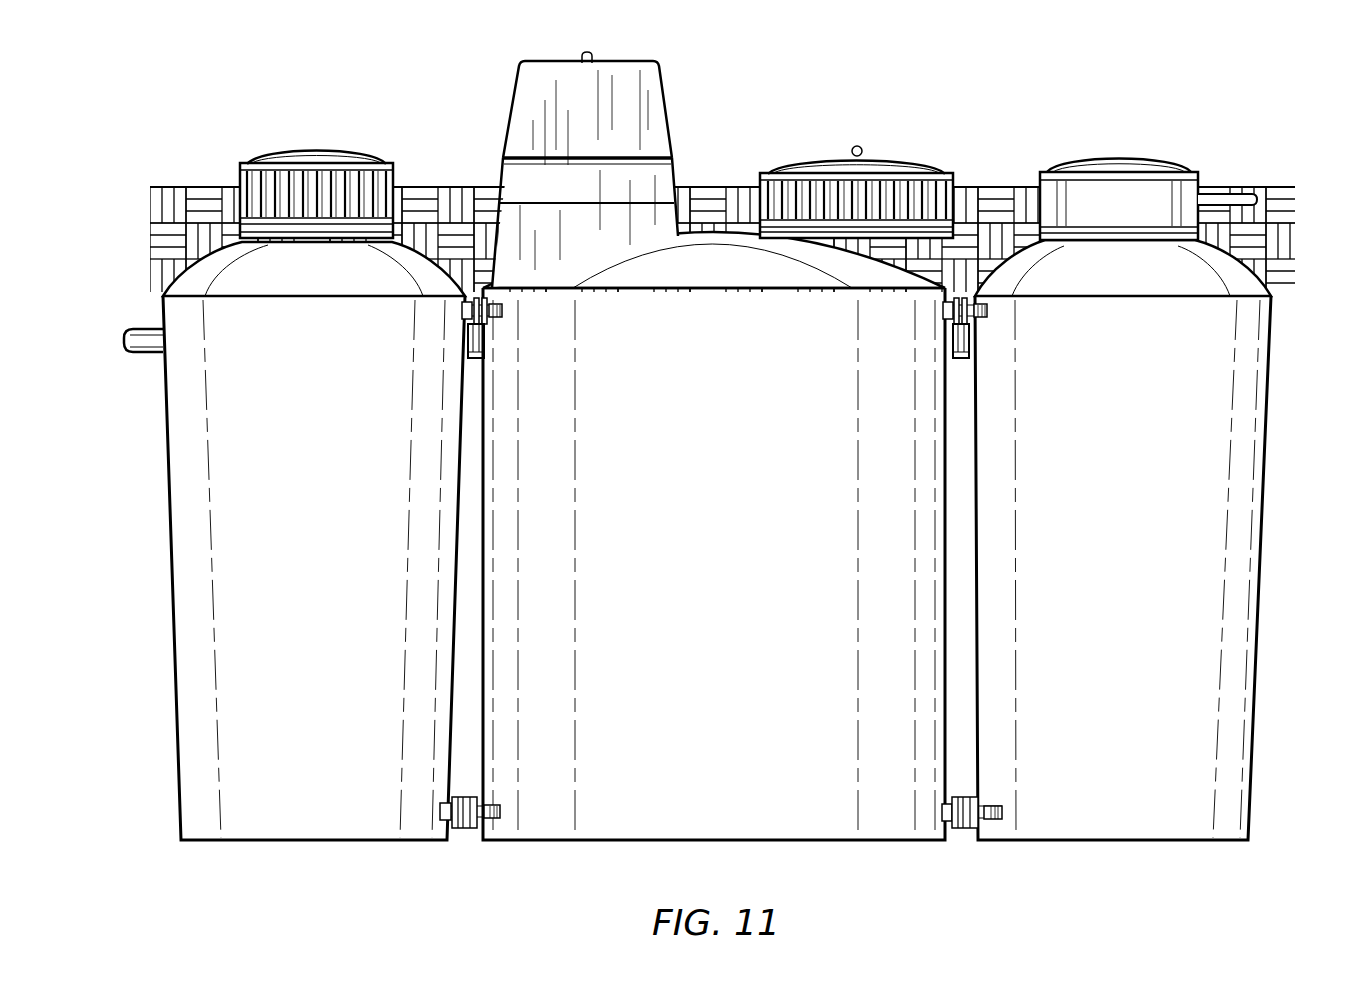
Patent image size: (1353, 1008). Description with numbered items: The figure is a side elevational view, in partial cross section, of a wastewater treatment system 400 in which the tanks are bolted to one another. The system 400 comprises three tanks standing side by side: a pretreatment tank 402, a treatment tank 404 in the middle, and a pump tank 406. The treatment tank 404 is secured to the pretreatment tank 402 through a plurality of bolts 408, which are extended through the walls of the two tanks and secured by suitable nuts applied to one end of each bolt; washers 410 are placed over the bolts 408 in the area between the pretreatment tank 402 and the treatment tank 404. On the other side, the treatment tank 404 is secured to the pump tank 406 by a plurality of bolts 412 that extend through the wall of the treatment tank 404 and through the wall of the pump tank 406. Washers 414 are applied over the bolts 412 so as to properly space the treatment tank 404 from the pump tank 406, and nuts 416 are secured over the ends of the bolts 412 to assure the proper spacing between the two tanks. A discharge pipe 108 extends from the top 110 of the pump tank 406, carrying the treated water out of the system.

The discharge pipe 108 is at (1243, 198).
The top of the pump tank 110 is at (1187, 162).
The wastewater treatment system 400 is at (726, 492).
The pretreatment tank 402 is at (241, 838).
The treatment tank 404 is at (830, 838).
The pump tank 406 is at (1152, 477).
The bolts 408 is at (495, 316).
The washers 410 is at (468, 322).
The bolts 412 is at (943, 308).
The washers 414 is at (956, 328).
The nuts 416 is at (972, 322).